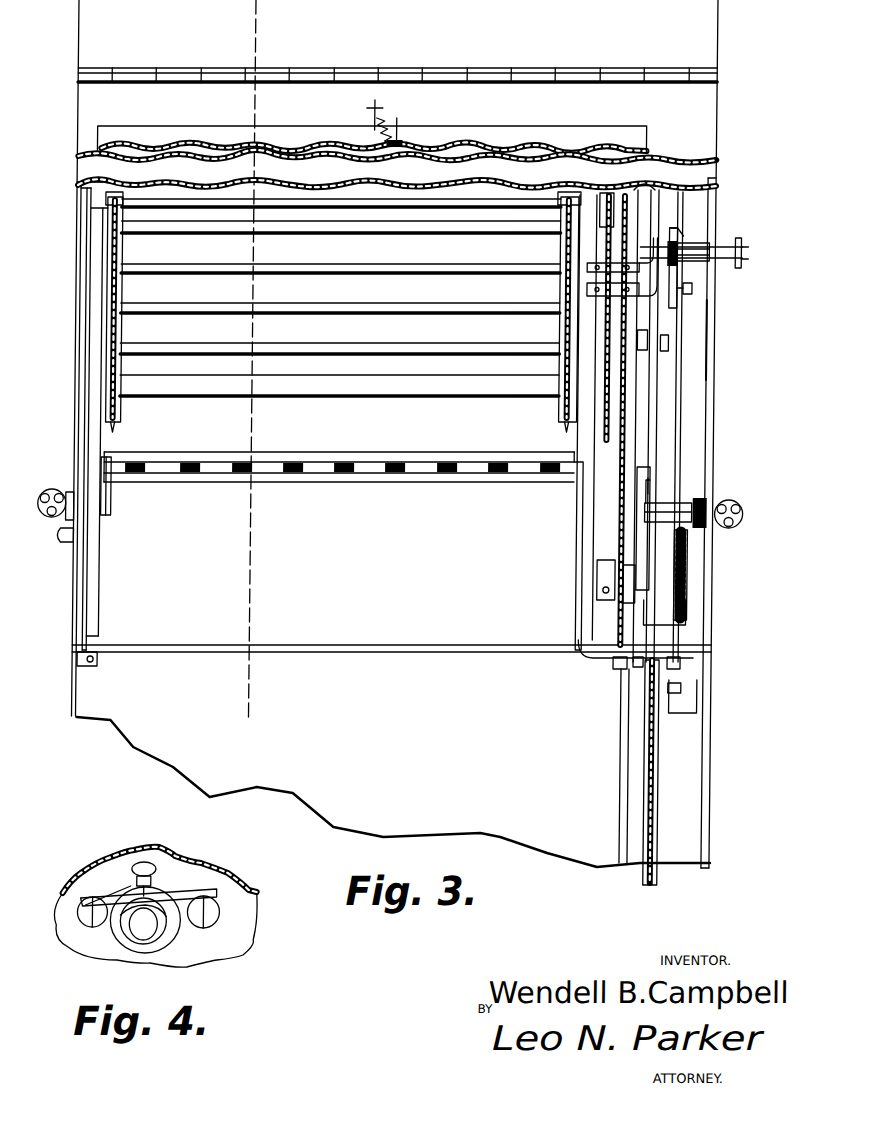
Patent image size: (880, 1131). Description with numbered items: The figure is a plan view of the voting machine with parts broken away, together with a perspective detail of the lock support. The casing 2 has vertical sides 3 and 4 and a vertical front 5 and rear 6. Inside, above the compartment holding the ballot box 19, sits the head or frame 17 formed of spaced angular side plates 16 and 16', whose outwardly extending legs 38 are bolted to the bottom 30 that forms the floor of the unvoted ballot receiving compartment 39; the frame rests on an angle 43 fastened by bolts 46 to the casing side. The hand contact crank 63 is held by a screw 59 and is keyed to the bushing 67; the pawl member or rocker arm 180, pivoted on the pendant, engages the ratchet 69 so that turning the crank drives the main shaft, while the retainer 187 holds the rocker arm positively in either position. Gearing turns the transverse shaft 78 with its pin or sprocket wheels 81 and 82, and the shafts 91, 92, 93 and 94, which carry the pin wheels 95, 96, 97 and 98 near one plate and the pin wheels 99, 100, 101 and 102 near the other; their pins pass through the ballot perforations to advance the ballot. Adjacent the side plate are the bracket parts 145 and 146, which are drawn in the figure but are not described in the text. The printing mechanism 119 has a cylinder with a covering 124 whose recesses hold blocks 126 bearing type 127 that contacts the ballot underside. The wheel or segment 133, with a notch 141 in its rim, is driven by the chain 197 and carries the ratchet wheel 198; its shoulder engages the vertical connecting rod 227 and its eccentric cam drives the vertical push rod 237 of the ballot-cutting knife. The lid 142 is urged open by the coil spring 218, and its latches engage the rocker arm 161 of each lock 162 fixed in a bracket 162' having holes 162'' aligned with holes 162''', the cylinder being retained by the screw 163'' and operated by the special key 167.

In FIG. 3, the casing 2 is at (101, 25).
In FIG. 4, the casing 2 is at (251, 892).
In FIG. 3, the vertical side 3 is at (78, 352).
In FIG. 3, the vertical side 4 is at (718, 762).
In FIG. 4, the vertical side 4 is at (258, 926).
In FIG. 3, the vertical front 5 is at (256, 713).
In FIG. 3, the vertical rear 6 is at (578, 838).
In FIG. 3, the side plate 16 is at (390, 409).
In FIG. 3, the side plate 16' is at (546, 422).
In FIG. 3, the head or frame 17 is at (103, 554).
In FIG. 3, the ballot box 19 is at (610, 700).
In FIG. 3, the bottom 30 is at (349, 654).
In FIG. 3, the outwardly extending legs 38 is at (627, 641).
In FIG. 3, the unvoted ballot receiving compartment 39 is at (312, 634).
In FIG. 3, the angle 43 is at (704, 704).
In FIG. 3, the bolts 46 is at (687, 700).
In FIG. 3, the screw 59 is at (747, 258).
In FIG. 3, the hand contact crank 63 is at (743, 344).
In FIG. 3, the bushing 67 is at (726, 240).
In FIG. 3, the ratchet 69 is at (681, 276).
In FIG. 3, the shaft 78 is at (316, 240).
In FIG. 3, the pin or sprocket wheel 81 is at (128, 237).
In FIG. 3, the pin or sprocket wheel 82 is at (545, 213).
In FIG. 3, the shaft 91 is at (328, 283).
In FIG. 3, the shaft 92 is at (320, 322).
In FIG. 3, the shaft 93 is at (421, 346).
In FIG. 3, the shaft 94 is at (338, 398).
In FIG. 3, the pin wheel 95 is at (590, 287).
In FIG. 3, the pin wheel 96 is at (566, 302).
In FIG. 3, the pin wheel 97 is at (565, 357).
In FIG. 3, the pin wheel 98 is at (577, 410).
In FIG. 3, the pin wheel 99 is at (128, 277).
In FIG. 3, the pin wheel 100 is at (128, 317).
In FIG. 3, the pin wheel 101 is at (130, 360).
In FIG. 3, the pin wheel 102 is at (130, 414).
In FIG. 3, the printing mechanism 119 is at (253, 483).
In FIG. 3, the covering 124 is at (314, 452).
In FIG. 3, the blocks 126 is at (460, 472).
In FIG. 3, the indication or type 127 is at (355, 488).
In FIG. 3, the wheel or segment 133 is at (666, 393).
In FIG. 3, the notch 141 is at (633, 668).
In FIG. 3, the lid 142 is at (562, 142).
In FIG. 3, the upper bracket arm 145 is at (586, 266).
In FIG. 3, the bracket bend 146 is at (587, 304).
In FIG. 3, the rocker arm 161 is at (113, 490).
In FIG. 3, the lock 162 is at (715, 572).
In FIG. 3, the brackets 162' is at (715, 485).
In FIG. 4, the brackets 162' is at (187, 864).
In FIG. 4, the holes 162'' is at (163, 938).
In FIG. 4, the holes 162''' is at (73, 875).
In FIG. 4, the screw 163'' is at (118, 840).
In FIG. 3, the key 167 is at (44, 505).
In FIG. 3, the pawl member or rocker arm 180 is at (673, 335).
In FIG. 3, the retainer 187 is at (696, 296).
In FIG. 3, the chain 197 is at (621, 546).
In FIG. 3, the ratchet wheel 198 is at (683, 618).
In FIG. 3, the coil spring 218 is at (401, 120).
In FIG. 3, the vertical connecting rod 227 is at (665, 212).
In FIG. 3, the vertical push rod 237 is at (681, 225).